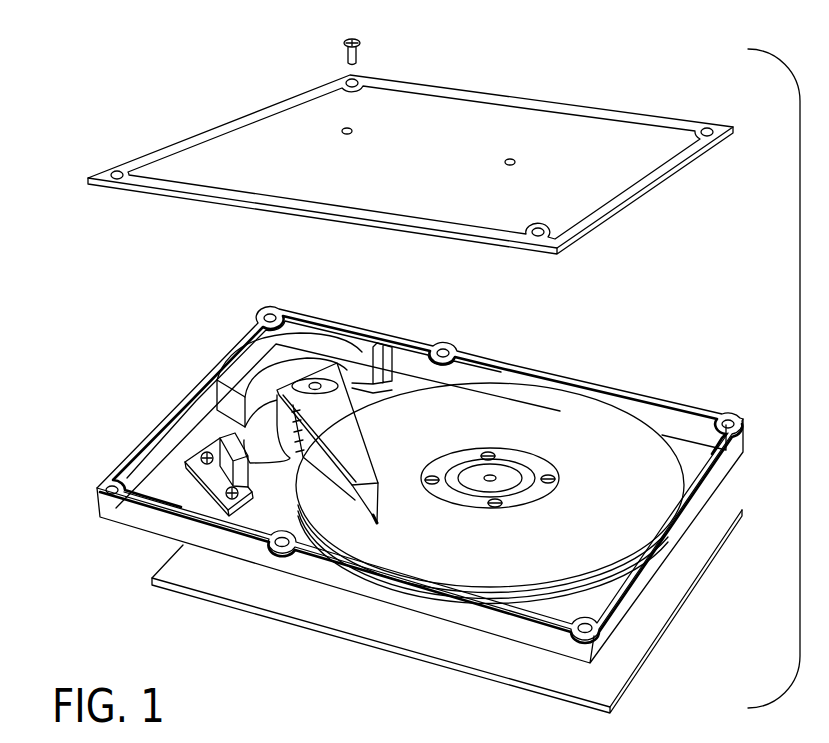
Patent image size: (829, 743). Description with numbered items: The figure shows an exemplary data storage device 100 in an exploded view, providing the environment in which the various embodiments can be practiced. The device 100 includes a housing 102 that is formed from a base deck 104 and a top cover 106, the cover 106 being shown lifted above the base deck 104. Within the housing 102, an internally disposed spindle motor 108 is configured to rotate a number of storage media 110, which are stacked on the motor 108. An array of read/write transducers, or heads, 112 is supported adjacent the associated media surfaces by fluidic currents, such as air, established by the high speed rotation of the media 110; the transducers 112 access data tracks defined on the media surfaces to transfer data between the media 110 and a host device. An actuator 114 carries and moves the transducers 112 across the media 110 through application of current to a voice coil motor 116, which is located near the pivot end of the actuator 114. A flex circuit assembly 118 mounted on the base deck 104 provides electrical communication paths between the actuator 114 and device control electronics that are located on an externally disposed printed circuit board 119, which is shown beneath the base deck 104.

The data storage device 100 is at (145, 83).
The housing 102 is at (130, 306).
The base deck 104 is at (658, 565).
The top cover 106 is at (505, 122).
The spindle motor 108 is at (508, 472).
The storage media 110 is at (517, 590).
The read/write transducers (heads) 112 is at (378, 521).
The actuator 114 is at (350, 447).
The voice coil motor (VCM) 116 is at (297, 348).
The flex circuit assembly 118 is at (205, 442).
The printed circuit board (PCB) 119 is at (244, 586).